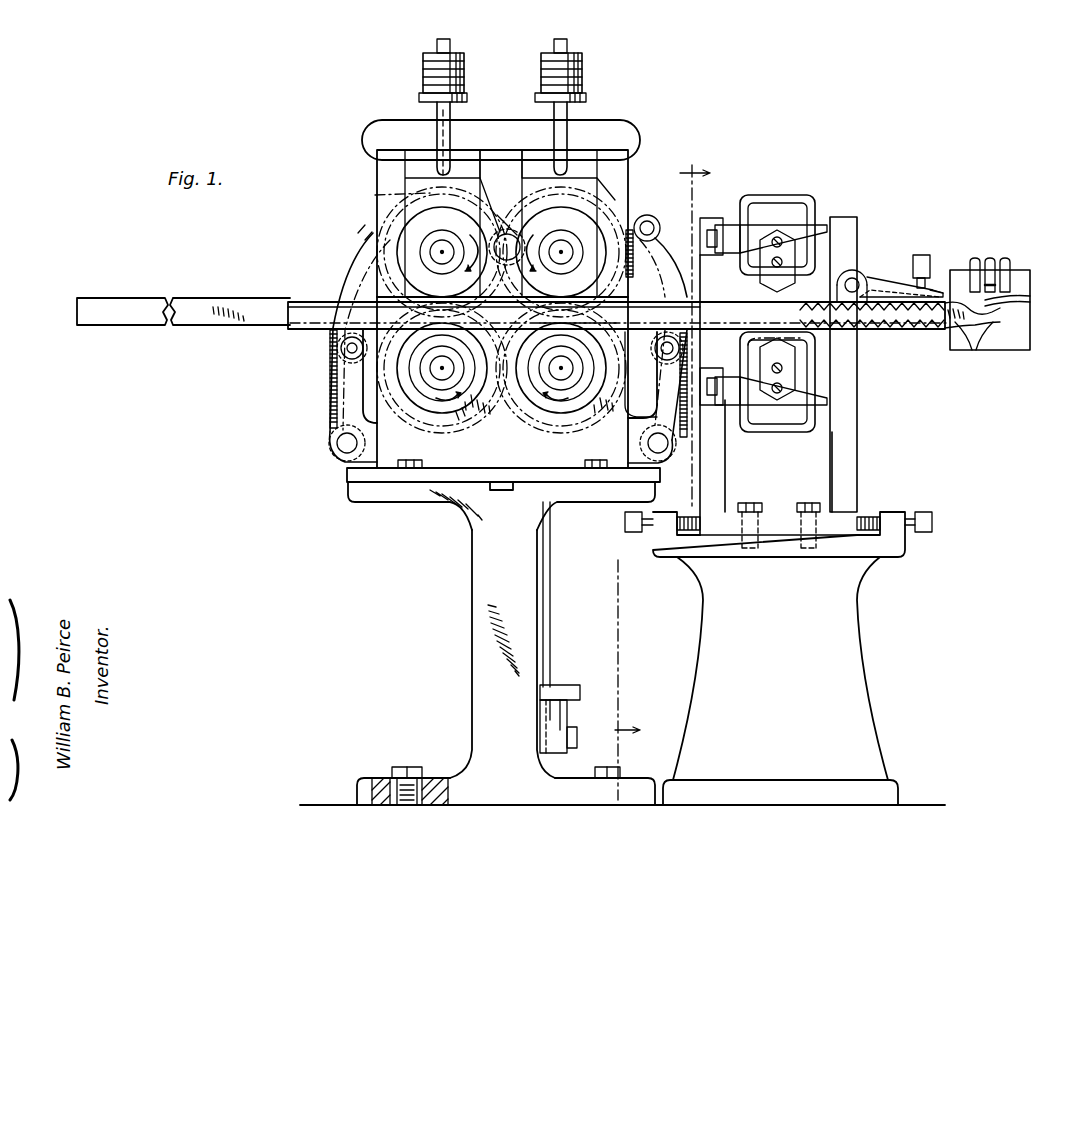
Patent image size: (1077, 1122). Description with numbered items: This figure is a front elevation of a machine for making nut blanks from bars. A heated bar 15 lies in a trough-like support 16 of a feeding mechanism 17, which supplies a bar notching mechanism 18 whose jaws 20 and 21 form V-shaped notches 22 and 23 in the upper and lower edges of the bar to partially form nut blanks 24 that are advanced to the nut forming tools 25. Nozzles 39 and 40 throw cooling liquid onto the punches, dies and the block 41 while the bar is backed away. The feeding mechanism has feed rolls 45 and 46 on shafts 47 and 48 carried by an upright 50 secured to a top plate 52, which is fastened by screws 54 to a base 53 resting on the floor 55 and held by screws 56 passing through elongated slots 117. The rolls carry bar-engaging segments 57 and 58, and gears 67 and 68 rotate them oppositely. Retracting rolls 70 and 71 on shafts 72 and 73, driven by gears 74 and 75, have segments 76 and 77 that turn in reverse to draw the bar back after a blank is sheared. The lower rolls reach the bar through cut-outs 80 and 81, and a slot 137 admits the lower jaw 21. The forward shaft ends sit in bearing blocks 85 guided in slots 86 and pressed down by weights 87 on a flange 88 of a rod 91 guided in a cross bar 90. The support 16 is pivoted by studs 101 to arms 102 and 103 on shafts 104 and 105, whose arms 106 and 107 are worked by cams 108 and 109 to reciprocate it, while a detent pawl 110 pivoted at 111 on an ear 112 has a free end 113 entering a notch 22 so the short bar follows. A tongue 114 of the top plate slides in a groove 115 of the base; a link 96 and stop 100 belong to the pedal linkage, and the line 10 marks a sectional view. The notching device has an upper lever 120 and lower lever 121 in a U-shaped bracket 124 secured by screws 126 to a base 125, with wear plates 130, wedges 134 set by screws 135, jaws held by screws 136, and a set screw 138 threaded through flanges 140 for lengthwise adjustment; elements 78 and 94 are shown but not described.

The section line 10 is at (650, 477).
The bar 15 is at (205, 298).
The support 16 is at (298, 310).
The feeding mechanism 17 is at (339, 137).
The bar notching mechanism 18 is at (870, 202).
The upper notching jaw 20 is at (768, 302).
The lower notching jaw 21 is at (785, 342).
The upper V-shaped notch 22 is at (958, 300).
The lower V-shaped notch 23 is at (972, 350).
The nut blank 24 is at (1030, 298).
The nut forming tools 25 is at (1014, 360).
The nozzles 39 is at (1003, 258).
The nozzle 40 is at (1010, 270).
The block 41 is at (1020, 325).
The upper feed roll 45 is at (588, 235).
The lower feed roll 46 is at (585, 388).
The shaft 47 is at (561, 255).
The shaft 48 is at (556, 372).
The upright 50 is at (440, 484).
The top plate 52 is at (380, 486).
The support or base 53 is at (470, 636).
The screws 54 is at (418, 458).
The floor 55 is at (481, 784).
The screws 56 is at (400, 767).
The bar-engaging segment 57 is at (600, 308).
The bar-engaging segment 58 is at (655, 348).
The gear 67 is at (604, 210).
The gear 68 is at (628, 396).
The upper retracting roll 70 is at (425, 228).
The lower retracting roll 71 is at (436, 378).
The shaft 72 is at (442, 255).
The shaft 73 is at (420, 395).
The gear 74 is at (470, 195).
The gear 75 is at (470, 410).
The projecting segment 76 is at (495, 230).
The projecting segment 77 is at (471, 400).
The shaft 78 is at (432, 370).
The cut-out 80 is at (596, 350).
The cut-out 81 is at (483, 402).
The bearing blocks 85 is at (425, 178).
The slots 86 is at (538, 158).
The weights 87 is at (423, 78).
The flange 88 is at (419, 96).
The cross bar 90 is at (616, 130).
The rod 91 is at (452, 118).
The cam 94 is at (548, 730).
The link 96 is at (552, 604).
The stop 100 is at (540, 712).
The studs 101 is at (340, 350).
The upstanding arm 102 is at (335, 388).
The upstanding arm 103 is at (710, 410).
The shaft 104 is at (340, 448).
The shaft 105 is at (660, 450).
The upstanding arm 106 is at (357, 268).
The upstanding arm 107 is at (655, 240).
The cam 108 is at (395, 192).
The cam 109 is at (930, 222).
The detent pawl 110 is at (893, 277).
The pivot 111 is at (850, 278).
The ear 112 is at (868, 277).
The free end of pawl 113 is at (936, 288).
The tongue 114 is at (470, 506).
The groove 115 is at (500, 495).
The elongated slots 117 is at (432, 778).
The upper lever 120 is at (752, 195).
The lower lever 121 is at (782, 432).
The U-shaped bracket 124 is at (858, 450).
The base 125 is at (850, 665).
The screws 126 is at (805, 503).
The wear plates 130 is at (932, 520).
The wedges 134 is at (765, 225).
The screws 135 is at (708, 218).
The screws 136 is at (782, 262).
The slot 137 is at (810, 338).
The set screw 138 is at (625, 524).
The flanges 140 is at (893, 512).